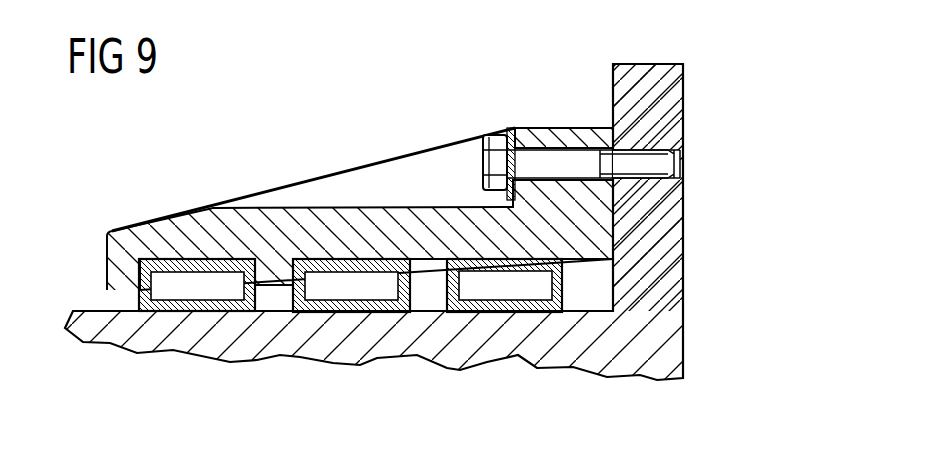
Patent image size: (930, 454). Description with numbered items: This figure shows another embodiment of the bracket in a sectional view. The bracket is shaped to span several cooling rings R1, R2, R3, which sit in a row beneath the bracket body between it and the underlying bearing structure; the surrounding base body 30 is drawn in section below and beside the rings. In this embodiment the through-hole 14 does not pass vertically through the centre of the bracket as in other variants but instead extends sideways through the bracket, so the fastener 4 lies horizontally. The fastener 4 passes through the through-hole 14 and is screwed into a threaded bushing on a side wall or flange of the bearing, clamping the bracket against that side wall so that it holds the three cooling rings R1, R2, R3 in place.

The fastener 4 is at (536, 160).
The through-hole 14 is at (573, 128).
The base body 30 is at (95, 328).
The cooling ring R1 is at (198, 285).
The cooling ring R2 is at (354, 285).
The cooling ring R3 is at (505, 300).